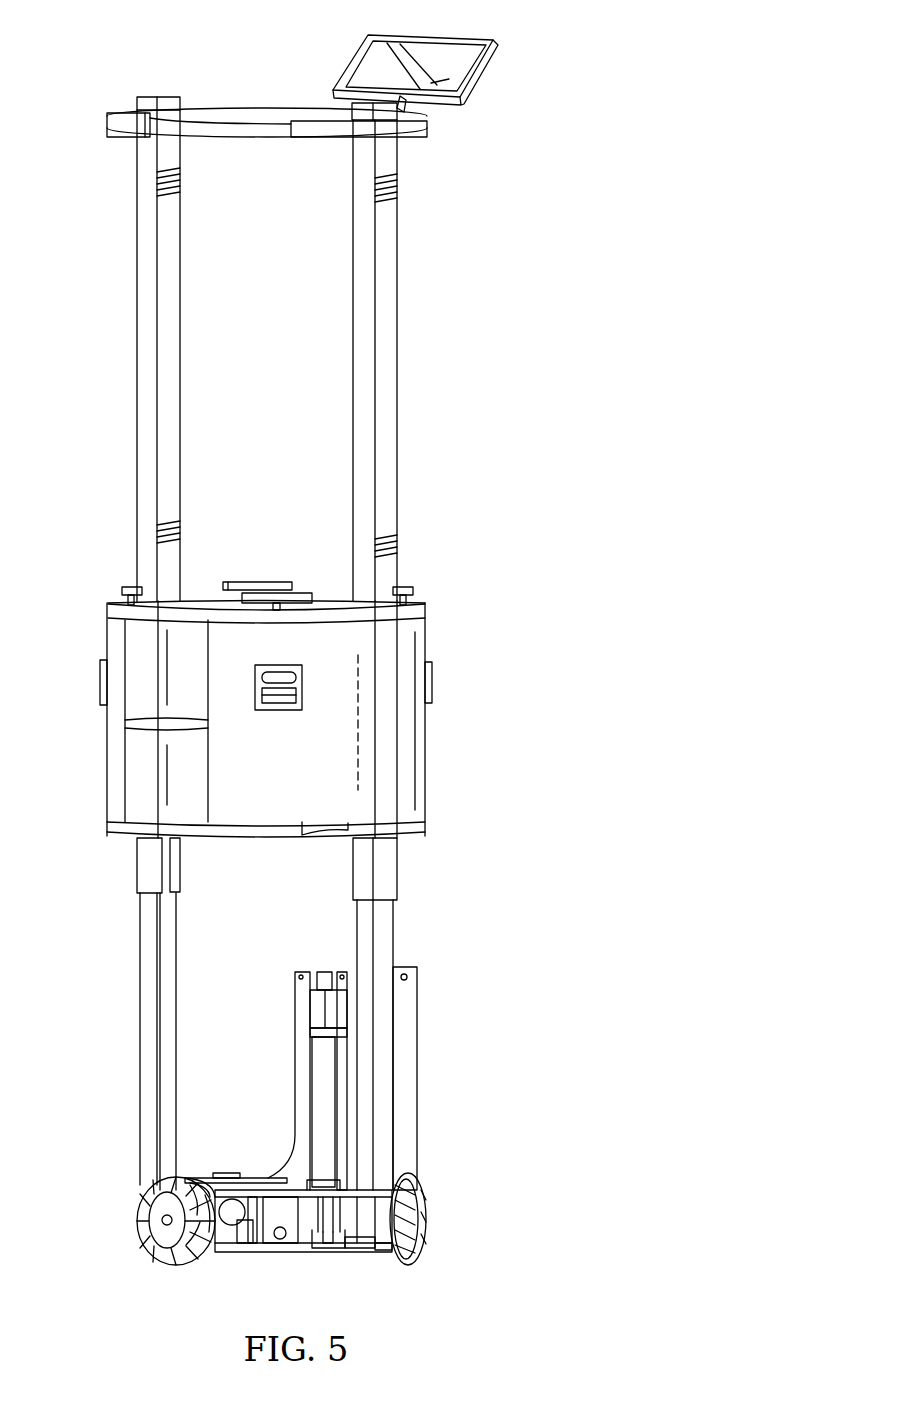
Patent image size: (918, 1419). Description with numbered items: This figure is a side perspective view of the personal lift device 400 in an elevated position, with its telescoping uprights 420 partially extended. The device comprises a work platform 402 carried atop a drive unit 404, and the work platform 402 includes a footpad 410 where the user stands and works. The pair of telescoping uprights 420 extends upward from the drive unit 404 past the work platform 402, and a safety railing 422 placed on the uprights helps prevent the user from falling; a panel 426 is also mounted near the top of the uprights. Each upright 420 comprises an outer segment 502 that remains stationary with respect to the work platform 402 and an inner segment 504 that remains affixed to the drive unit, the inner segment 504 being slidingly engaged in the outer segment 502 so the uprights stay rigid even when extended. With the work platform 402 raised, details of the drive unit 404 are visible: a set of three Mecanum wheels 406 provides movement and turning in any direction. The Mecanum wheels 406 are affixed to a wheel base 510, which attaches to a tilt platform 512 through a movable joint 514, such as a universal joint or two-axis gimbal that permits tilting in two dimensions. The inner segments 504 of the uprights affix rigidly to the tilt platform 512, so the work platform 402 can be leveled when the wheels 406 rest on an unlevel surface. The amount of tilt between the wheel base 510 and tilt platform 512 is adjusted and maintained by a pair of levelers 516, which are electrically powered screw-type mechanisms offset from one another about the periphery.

The personal lift device 400 is at (576, 50).
The work platform 402 is at (436, 753).
The drive unit 404 is at (234, 1261).
The Mecanum wheels 406 is at (165, 1262).
The footpad 410 is at (330, 600).
The telescoping uprights 420 is at (130, 352).
The safety railing 422 is at (244, 108).
The display panel 426 is at (446, 50).
The outer segment 502 is at (136, 478).
The inner segment 504 is at (394, 938).
The wheel base 510 is at (342, 1265).
The tilt platform 512 is at (213, 1176).
The movable joint 514 is at (284, 1208).
The levelers 516 is at (300, 1015).